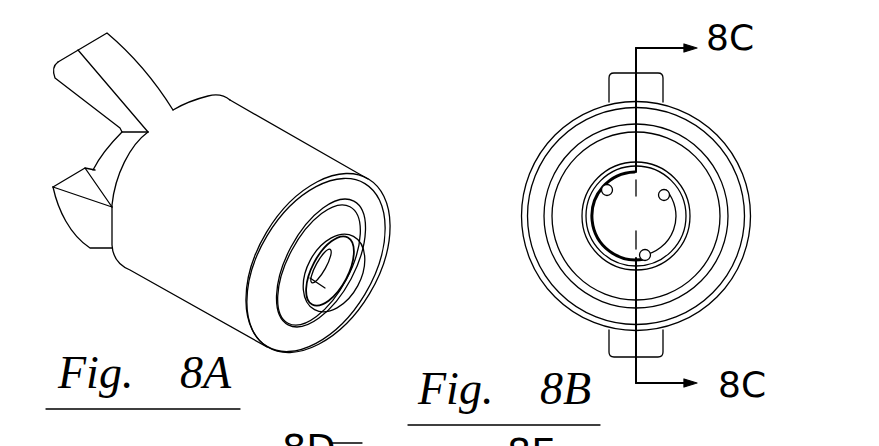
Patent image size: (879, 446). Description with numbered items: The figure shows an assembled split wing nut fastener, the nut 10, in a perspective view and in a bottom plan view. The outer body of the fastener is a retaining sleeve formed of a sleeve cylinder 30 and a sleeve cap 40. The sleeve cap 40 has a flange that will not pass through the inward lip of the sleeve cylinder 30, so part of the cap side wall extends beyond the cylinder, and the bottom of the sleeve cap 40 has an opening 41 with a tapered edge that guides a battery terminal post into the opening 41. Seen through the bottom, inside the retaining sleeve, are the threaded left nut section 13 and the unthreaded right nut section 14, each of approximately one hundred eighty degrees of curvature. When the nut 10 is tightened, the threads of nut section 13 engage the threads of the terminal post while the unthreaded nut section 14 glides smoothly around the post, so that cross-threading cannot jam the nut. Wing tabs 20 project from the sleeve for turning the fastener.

In FIG. 8A, the nut 10 is at (240, 194).
In FIG. 8B, the threaded left nut section 13 is at (668, 197).
In FIG. 8B, the unthreaded right nut section 14 is at (603, 190).
In FIG. 8A, the locking tab 20 is at (118, 47).
In FIG. 8B, the locking tab 20 is at (656, 339).
In FIG. 8A, the sleeve cylinder 30 is at (258, 122).
In FIG. 8B, the sleeve cylinder 30 is at (737, 267).
In FIG. 8A, the sleeve cap 40 is at (362, 298).
In FIG. 8B, the sleeve cap 40 is at (671, 160).
In FIG. 8B, the opening 41 is at (648, 228).